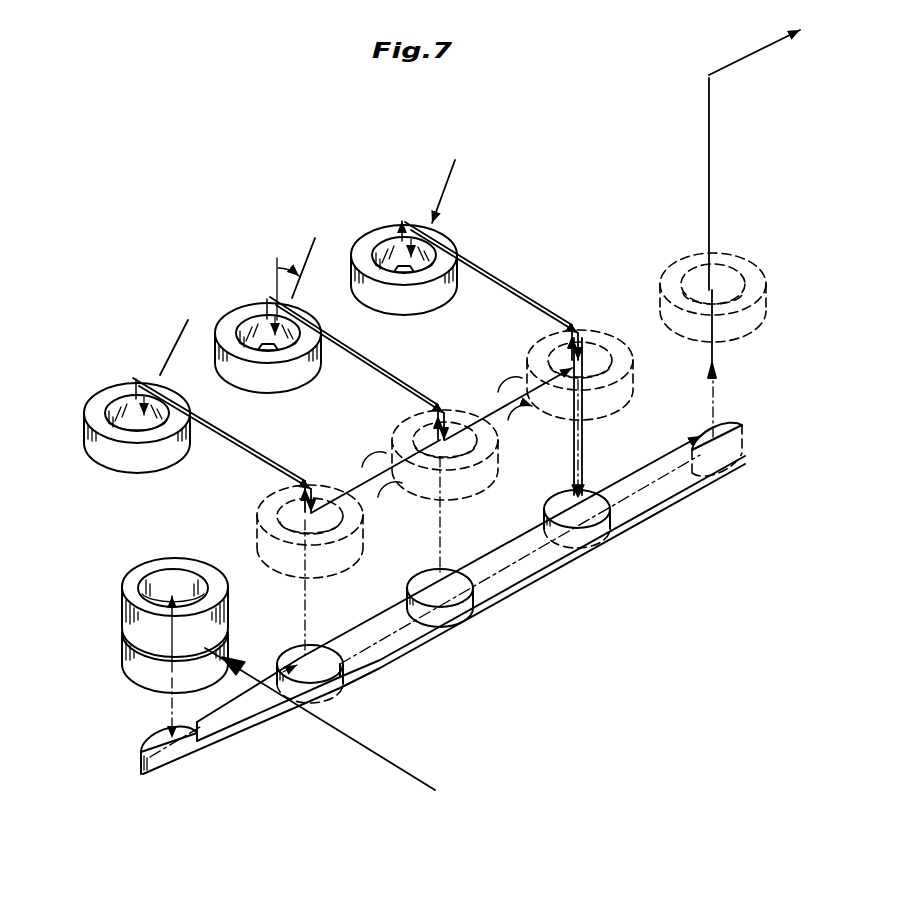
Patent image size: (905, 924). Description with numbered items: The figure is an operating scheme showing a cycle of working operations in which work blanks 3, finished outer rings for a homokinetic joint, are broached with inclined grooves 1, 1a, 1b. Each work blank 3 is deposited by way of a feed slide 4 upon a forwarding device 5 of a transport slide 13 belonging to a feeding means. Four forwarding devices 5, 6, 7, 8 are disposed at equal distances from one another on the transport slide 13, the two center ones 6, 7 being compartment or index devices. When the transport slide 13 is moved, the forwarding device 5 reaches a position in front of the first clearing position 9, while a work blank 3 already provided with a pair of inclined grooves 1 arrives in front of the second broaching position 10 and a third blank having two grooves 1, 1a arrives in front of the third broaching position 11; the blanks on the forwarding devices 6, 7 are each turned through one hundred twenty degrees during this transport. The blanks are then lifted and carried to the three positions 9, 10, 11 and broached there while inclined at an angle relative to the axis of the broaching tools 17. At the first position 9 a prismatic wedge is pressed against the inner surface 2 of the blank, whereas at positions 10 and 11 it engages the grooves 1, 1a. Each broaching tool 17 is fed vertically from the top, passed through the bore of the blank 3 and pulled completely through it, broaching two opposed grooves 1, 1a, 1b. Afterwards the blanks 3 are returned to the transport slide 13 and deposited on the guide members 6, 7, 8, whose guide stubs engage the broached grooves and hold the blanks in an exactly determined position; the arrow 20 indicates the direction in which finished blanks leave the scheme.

The inclined groove 1 is at (165, 400).
The inclined groove 1a is at (243, 350).
The inclined groove 1b is at (372, 268).
The inner surface 2 is at (112, 397).
The work blank 3 is at (117, 458).
The feed slide 4 is at (333, 730).
The forwarding device 5 is at (165, 755).
The forwarding device 6 is at (323, 650).
The forwarding device 7 is at (453, 613).
The forwarding device 8 is at (597, 535).
The first clearing position 9 is at (117, 371).
The second broaching position 10 is at (233, 292).
The third broaching position 11 is at (364, 194).
The transport slide 13 is at (520, 573).
The broaching tool 17 is at (187, 321).
The discharge direction 20 is at (765, 49).